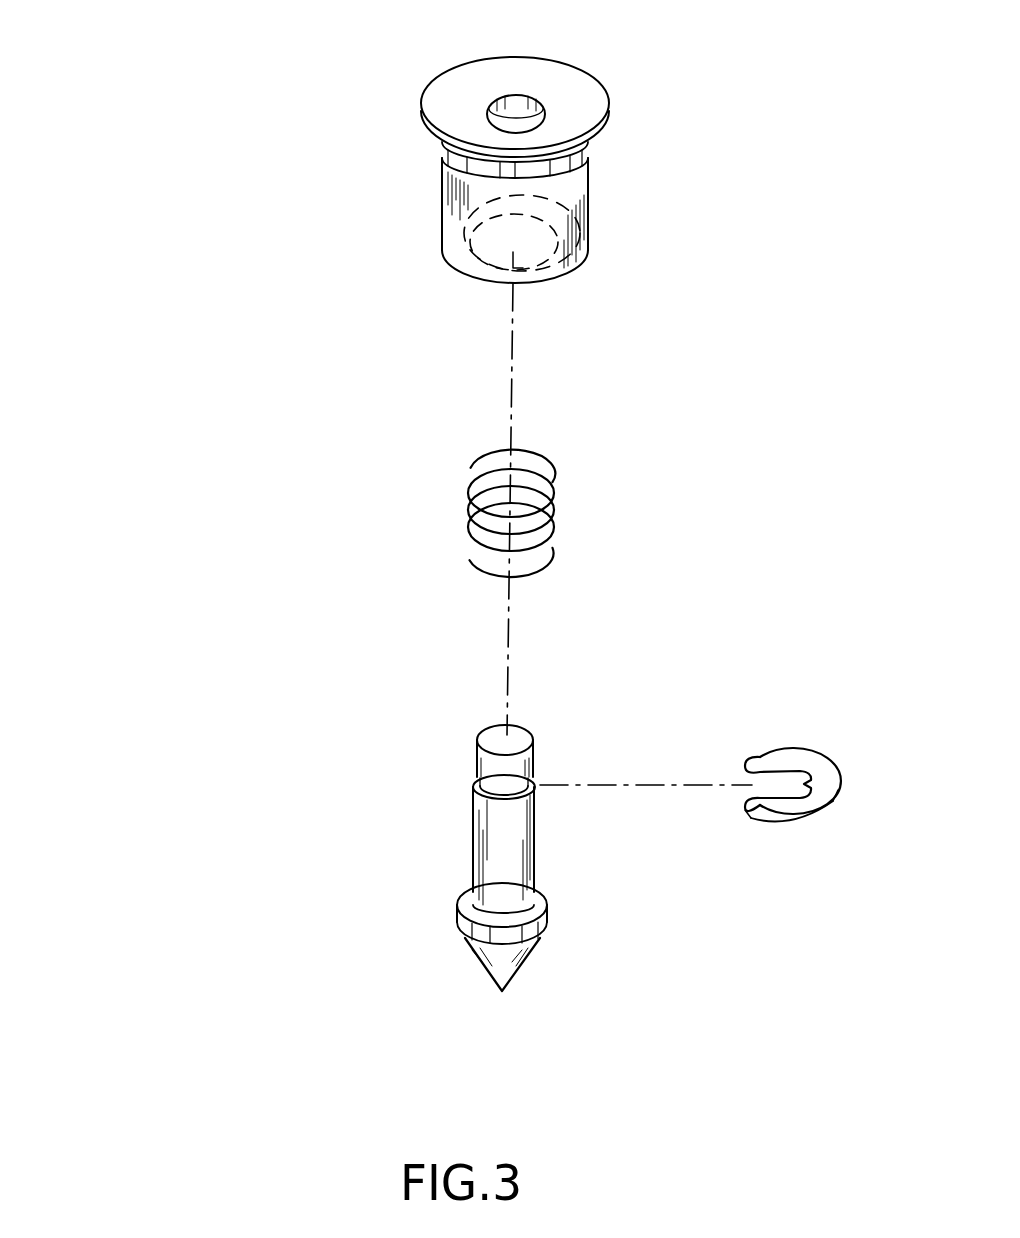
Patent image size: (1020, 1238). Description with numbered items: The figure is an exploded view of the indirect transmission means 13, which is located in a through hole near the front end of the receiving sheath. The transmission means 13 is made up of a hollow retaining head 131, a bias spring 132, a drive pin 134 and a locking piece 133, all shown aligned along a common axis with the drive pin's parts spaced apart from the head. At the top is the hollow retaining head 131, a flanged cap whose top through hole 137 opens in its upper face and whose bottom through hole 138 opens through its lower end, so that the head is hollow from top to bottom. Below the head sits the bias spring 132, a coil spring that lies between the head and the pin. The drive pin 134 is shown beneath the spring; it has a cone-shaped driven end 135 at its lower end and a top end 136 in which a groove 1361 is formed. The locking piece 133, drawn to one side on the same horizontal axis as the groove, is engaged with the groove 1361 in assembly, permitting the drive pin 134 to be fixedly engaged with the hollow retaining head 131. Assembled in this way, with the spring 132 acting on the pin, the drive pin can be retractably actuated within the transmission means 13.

The indirect transmission means 13 is at (252, 442).
The hollow retaining head 131 is at (568, 191).
The bias spring 132 is at (563, 523).
The locking piece 133 is at (811, 764).
The drive pin 134 is at (548, 852).
The cone-shaped driven end 135 is at (527, 971).
The top end 136 is at (545, 733).
The groove 1361 is at (473, 777).
The top through hole 137 is at (514, 119).
The bottom through hole 138 is at (532, 247).